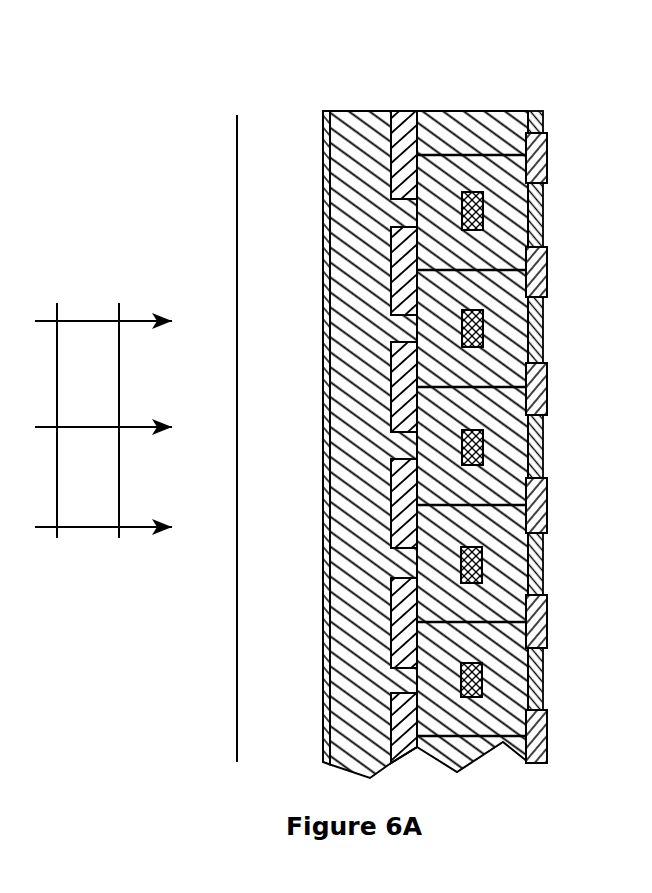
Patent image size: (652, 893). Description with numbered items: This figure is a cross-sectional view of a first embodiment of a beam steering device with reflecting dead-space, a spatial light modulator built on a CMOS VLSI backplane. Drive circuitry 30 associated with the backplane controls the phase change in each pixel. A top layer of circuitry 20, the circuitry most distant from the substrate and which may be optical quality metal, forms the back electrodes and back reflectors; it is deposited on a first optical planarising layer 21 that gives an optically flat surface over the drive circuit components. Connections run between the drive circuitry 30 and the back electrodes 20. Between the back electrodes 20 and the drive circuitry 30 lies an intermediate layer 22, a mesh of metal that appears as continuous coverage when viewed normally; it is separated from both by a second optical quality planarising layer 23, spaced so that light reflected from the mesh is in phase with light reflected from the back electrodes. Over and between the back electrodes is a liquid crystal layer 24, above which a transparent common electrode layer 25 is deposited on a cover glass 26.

The top layer of circuitry 20 is at (405, 142).
The first optical planarising layer 21 is at (445, 482).
The intermediate layer of circuitry 22 is at (472, 215).
The second optical quality planarising layer 23 is at (512, 320).
The liquid crystal layer 24 is at (348, 136).
The transparent common electrode layer 25 is at (322, 610).
The cover glass 26 is at (277, 572).
The drive circuitry 30 is at (547, 268).